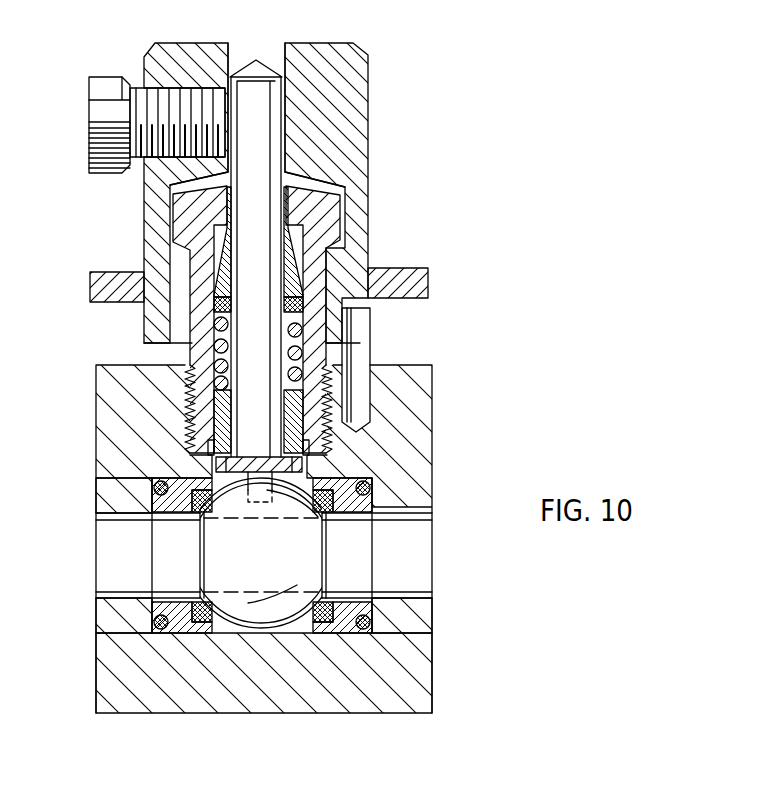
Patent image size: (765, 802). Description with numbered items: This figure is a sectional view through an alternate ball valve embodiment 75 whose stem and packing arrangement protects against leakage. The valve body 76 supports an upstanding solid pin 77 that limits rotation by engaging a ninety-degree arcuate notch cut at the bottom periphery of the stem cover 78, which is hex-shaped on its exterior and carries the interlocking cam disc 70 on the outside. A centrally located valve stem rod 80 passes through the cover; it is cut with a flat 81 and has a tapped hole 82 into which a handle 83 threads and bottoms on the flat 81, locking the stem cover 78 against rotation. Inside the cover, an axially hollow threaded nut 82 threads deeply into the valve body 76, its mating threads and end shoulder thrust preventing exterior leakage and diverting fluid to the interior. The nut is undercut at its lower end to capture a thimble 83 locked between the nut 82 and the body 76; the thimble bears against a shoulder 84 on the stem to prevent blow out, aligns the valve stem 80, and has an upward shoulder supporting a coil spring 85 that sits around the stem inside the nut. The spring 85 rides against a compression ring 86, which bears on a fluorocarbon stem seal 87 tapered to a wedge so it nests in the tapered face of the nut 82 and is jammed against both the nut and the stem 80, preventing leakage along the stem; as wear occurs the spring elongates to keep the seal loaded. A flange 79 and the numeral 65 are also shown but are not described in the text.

The embodiment 75 is at (418, 172).
The valve body 76 is at (417, 402).
The solid pin 77 is at (357, 328).
The stem cover 78 is at (365, 237).
The flange 79 is at (420, 276).
The valve stem rod 80 is at (268, 214).
The flat 81 is at (222, 90).
The hollow threaded nut 82 is at (183, 88).
The thimble 83 is at (100, 137).
The shoulder 84 is at (237, 454).
The coil spring 85 is at (213, 350).
The compression ring 86 is at (224, 311).
The stem seal 87 is at (222, 264).
The reference numeral (adjacent figure) 65 is at (511, 16).
The interlocking cam disc 70 is at (696, 9).